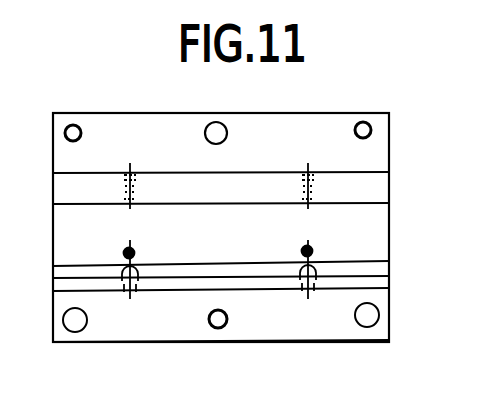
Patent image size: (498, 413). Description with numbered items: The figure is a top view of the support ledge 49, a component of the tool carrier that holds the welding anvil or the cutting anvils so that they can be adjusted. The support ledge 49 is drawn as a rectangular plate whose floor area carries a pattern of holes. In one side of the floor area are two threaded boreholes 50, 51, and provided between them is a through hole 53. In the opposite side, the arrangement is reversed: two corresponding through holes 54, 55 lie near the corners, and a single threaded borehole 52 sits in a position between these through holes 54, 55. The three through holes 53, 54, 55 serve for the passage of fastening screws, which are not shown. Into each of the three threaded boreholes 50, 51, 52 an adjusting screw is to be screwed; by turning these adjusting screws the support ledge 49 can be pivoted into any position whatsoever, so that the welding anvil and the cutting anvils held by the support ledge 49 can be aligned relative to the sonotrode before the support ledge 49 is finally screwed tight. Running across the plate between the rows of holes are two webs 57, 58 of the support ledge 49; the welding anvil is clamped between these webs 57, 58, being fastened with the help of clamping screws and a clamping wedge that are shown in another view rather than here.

The support ledge 49 is at (325, 108).
The threaded borehole 50 is at (72, 124).
The threaded borehole 51 is at (372, 130).
The threaded borehole 52 is at (215, 327).
The through hole 53 is at (215, 132).
The through hole 54 is at (75, 322).
The through hole 55 is at (367, 318).
The web 57 is at (362, 188).
The web 58 is at (368, 270).